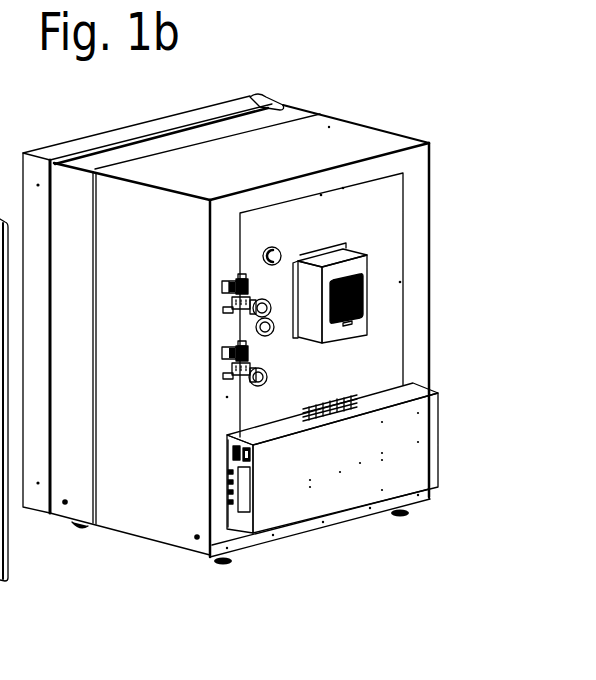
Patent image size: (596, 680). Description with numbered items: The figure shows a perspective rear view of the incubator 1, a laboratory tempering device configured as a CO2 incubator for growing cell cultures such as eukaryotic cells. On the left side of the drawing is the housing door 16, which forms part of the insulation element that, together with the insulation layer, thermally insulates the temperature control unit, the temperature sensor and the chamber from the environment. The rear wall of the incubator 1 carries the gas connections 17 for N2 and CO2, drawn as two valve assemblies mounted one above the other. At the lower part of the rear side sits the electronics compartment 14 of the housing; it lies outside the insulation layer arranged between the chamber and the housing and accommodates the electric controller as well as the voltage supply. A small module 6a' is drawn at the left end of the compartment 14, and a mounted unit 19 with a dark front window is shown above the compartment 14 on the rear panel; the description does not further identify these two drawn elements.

The incubator 1 is at (383, 130).
The housing door 16 is at (115, 128).
The gas connections 17 is at (222, 362).
The control unit 19 is at (369, 277).
The electronics compartment 14 is at (333, 490).
The control module / power unit 6a' is at (277, 521).